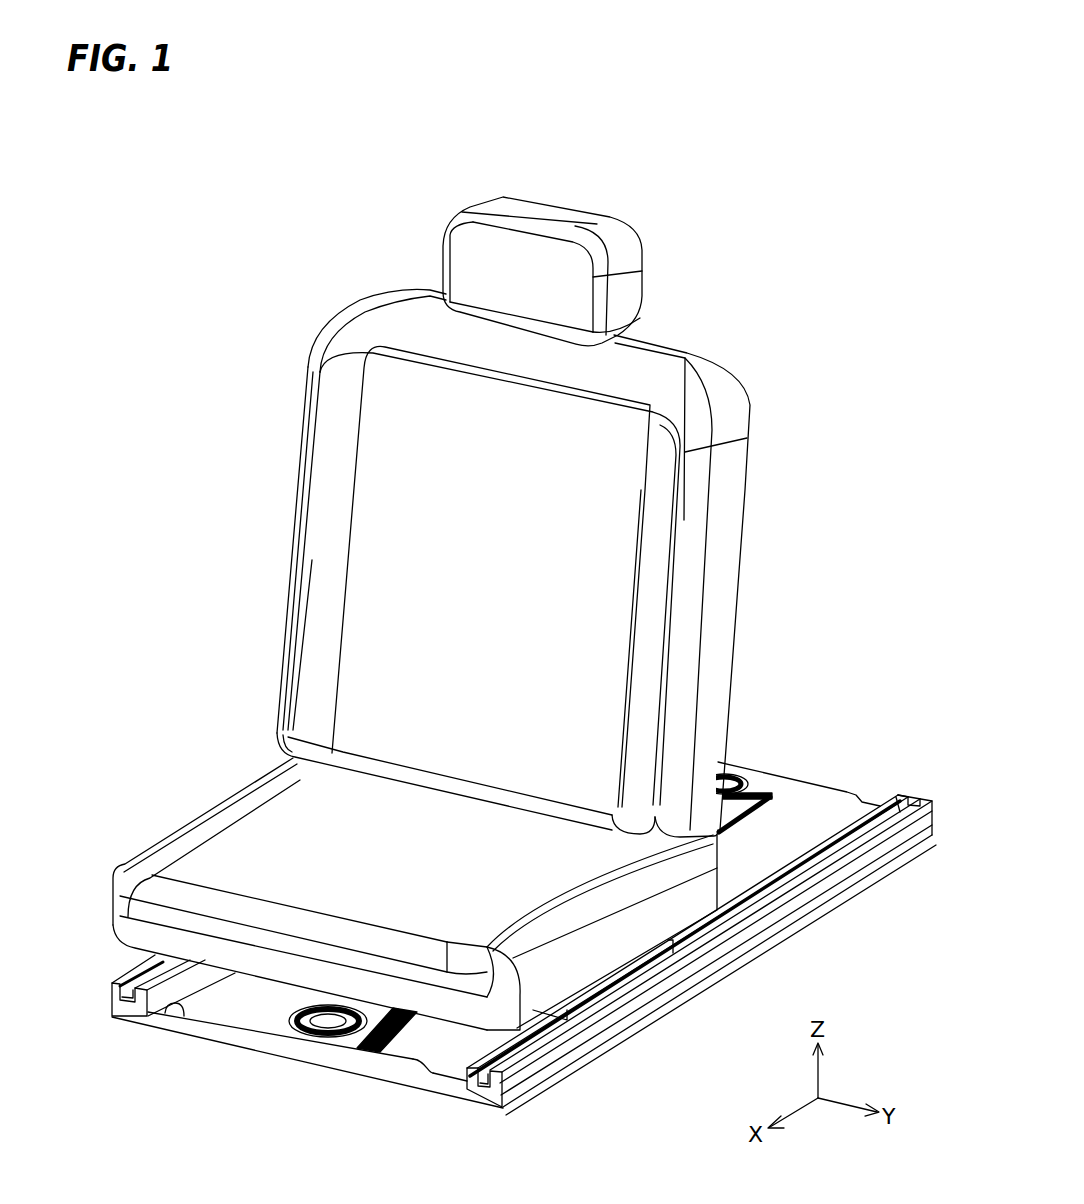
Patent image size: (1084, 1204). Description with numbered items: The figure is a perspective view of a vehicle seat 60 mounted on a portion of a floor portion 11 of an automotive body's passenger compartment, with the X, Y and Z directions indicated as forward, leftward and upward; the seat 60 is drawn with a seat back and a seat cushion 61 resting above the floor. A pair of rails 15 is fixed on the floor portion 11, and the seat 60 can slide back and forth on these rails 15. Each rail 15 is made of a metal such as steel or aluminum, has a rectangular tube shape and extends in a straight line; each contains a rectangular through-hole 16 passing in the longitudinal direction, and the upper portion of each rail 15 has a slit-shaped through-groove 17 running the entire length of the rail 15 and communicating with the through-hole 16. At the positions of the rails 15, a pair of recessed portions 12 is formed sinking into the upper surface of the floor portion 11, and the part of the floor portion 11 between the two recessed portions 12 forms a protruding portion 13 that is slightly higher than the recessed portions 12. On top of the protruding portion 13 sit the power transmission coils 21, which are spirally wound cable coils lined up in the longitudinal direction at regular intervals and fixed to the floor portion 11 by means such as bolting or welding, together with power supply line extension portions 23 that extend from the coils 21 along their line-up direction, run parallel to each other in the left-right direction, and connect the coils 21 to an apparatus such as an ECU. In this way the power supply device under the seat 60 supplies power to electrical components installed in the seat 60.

The floor portion 11 is at (264, 1045).
The recessed portion 12 is at (183, 1015).
The protruding portion 13 is at (240, 1010).
The rail 15 is at (112, 997).
The through-hole 16 is at (137, 1006).
The through-groove 17 is at (905, 796).
The power transmission coil 21 is at (332, 1035).
The power supply line extension portion 23 is at (388, 1038).
The seat 60 is at (723, 386).
The seat cushion 61 is at (267, 852).